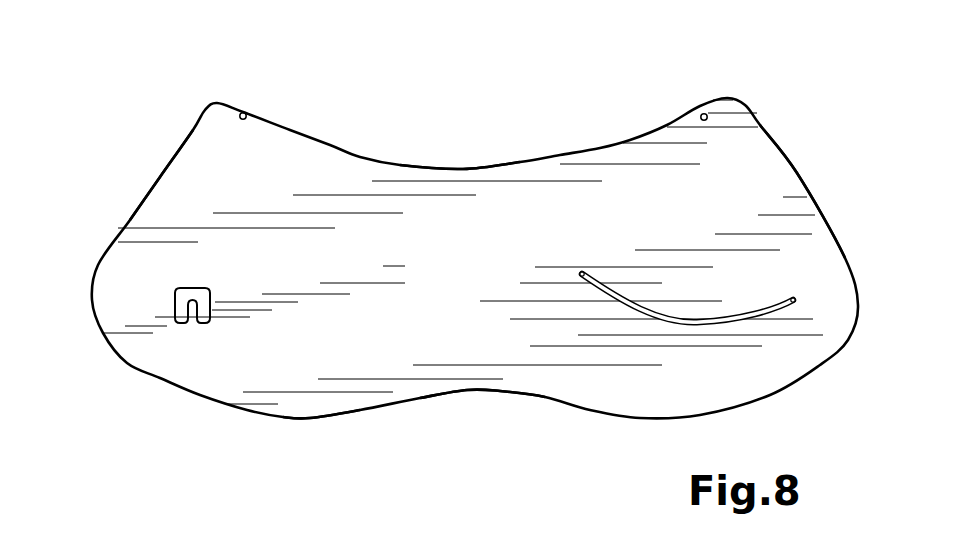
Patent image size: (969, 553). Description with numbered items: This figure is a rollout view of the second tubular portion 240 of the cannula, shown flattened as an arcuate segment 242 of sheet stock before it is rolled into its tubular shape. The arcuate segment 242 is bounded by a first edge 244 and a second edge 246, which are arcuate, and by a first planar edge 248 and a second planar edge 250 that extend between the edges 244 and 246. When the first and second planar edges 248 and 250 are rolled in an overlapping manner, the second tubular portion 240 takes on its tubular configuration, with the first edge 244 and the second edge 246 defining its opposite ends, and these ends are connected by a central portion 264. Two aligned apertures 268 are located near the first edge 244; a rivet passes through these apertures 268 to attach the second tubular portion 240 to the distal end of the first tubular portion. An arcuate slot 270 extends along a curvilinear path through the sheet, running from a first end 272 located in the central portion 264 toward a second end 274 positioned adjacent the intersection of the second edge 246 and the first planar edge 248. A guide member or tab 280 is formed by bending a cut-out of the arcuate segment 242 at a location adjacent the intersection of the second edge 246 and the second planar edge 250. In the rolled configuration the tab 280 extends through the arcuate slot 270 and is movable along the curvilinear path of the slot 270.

The second tubular portion 240 is at (262, 416).
The arcuate segment 242 is at (548, 190).
The first edge 244 is at (423, 165).
The second edge 246 is at (357, 408).
The first planar edge 248 is at (797, 173).
The second planar edge 250 is at (157, 177).
The central portion 264 is at (463, 318).
The apertures 268 is at (242, 113).
The arcuate slot 270 is at (675, 318).
The first end of arcuate slot 272 is at (582, 277).
The second end of arcuate slot 274 is at (795, 302).
The tab 280 is at (190, 300).